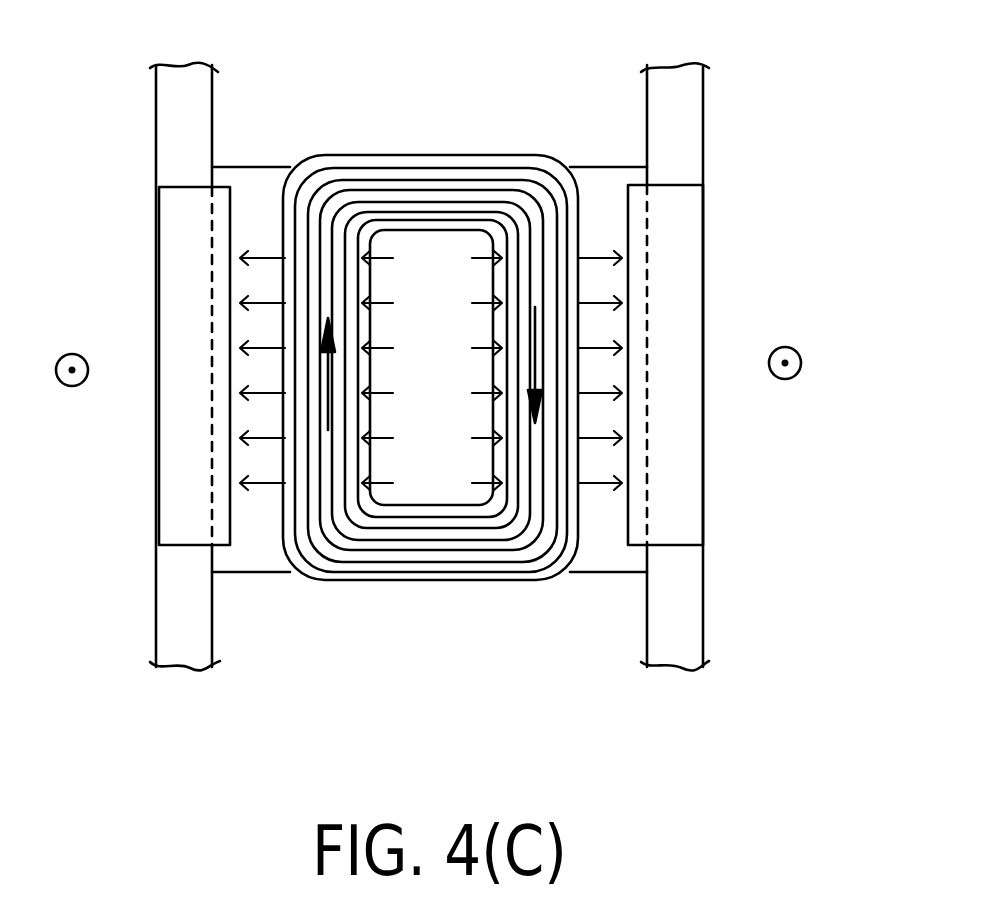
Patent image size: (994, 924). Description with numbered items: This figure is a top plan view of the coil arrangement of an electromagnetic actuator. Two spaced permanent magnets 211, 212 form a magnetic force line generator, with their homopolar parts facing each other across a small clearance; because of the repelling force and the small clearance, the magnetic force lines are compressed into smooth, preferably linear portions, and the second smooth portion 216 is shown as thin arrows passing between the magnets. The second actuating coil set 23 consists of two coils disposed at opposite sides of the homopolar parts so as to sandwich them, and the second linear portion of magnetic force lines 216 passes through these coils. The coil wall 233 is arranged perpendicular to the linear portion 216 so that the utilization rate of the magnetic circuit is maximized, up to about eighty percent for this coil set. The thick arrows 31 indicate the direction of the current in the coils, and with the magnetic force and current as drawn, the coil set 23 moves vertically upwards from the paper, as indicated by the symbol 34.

The permanent magnet 212 is at (252, 178).
The permanent magnet 211 is at (602, 187).
The second actuating coil set 23 is at (413, 183).
The coil wall 233 is at (493, 277).
The second smooth portion of magnetic force lines 216 is at (605, 308).
The arrow indicating current direction 31 is at (535, 363).
The symbol indicating movement direction 34 is at (802, 350).